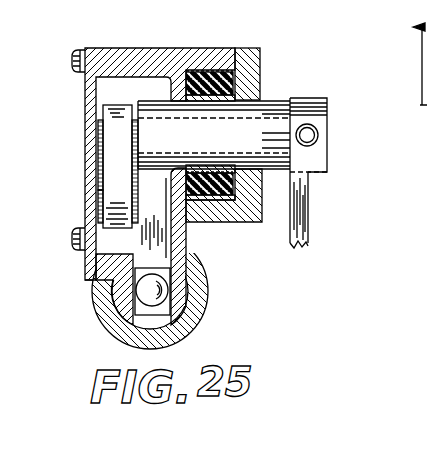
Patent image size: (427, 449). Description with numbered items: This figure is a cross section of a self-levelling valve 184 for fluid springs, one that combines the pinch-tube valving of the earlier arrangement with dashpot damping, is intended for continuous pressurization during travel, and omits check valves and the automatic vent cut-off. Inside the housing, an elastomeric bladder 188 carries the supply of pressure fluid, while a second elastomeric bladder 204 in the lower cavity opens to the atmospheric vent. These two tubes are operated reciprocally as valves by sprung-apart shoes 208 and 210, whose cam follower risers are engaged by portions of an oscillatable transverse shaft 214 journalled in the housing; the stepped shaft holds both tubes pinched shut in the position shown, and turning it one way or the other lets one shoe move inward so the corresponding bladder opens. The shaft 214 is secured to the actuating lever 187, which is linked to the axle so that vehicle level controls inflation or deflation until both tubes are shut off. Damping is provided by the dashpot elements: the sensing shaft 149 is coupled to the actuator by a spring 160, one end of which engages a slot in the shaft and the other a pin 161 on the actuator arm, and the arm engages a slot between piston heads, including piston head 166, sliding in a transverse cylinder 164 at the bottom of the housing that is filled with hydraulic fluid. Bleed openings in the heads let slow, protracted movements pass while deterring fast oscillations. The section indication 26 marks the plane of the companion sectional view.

The section line 26- 26 is at (211, 62).
The shaft 149 is at (100, 133).
The spring 160 is at (104, 181).
The pin 161 is at (104, 212).
The transverse cylinder 164 is at (109, 318).
The piston head 166 is at (188, 297).
The self-levelling valve 184 is at (264, 97).
The actuating lever 187 is at (310, 190).
The elastomeric bladder 188 is at (242, 77).
The elastomeric bladder 204 is at (239, 224).
The shoe 208 is at (186, 96).
The shoe 210 is at (209, 168).
The oscillatable transverse shaft 214 is at (273, 127).